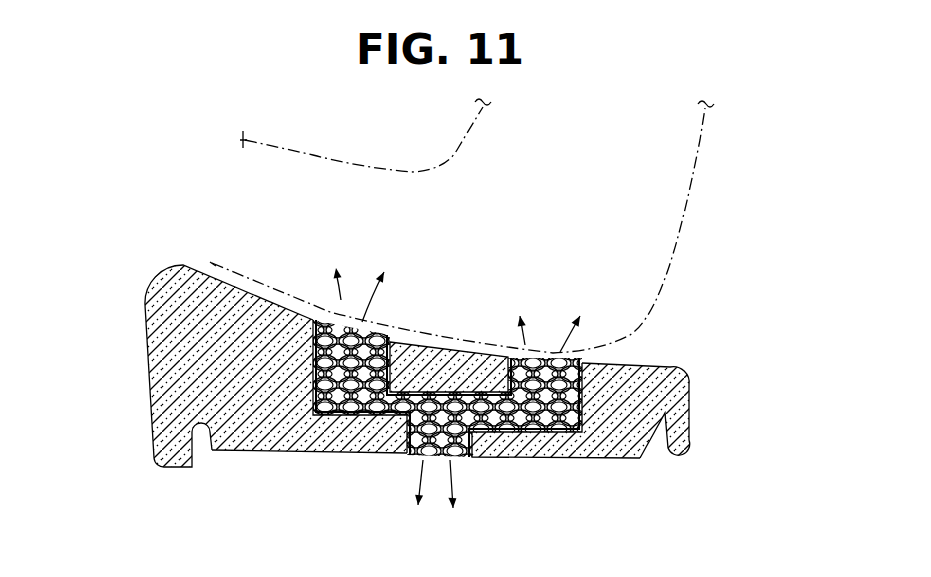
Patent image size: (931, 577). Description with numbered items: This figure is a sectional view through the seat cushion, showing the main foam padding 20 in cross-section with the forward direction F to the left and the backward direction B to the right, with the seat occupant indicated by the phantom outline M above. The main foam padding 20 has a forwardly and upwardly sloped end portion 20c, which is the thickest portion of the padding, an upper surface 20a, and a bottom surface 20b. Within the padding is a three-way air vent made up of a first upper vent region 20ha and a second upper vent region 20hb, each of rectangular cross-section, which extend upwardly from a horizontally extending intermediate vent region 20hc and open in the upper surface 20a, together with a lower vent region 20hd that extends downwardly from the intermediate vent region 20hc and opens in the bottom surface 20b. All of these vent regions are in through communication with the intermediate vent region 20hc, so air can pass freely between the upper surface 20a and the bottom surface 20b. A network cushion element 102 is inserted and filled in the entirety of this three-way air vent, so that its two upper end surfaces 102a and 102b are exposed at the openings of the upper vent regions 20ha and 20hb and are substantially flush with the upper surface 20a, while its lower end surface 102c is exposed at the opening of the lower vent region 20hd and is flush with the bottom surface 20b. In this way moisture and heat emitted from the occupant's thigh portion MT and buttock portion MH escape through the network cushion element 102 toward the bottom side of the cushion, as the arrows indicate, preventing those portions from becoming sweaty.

The main foam padding 20 is at (687, 372).
The upper surface 20a is at (244, 303).
The bottom surface 20b is at (245, 453).
The sloped end portion 20c is at (213, 268).
The first upper vent region 20ha is at (221, 450).
The second upper vent region 20hb is at (612, 459).
The intermediate vent region 20hc is at (390, 442).
The lower vent region 20hd is at (478, 457).
The network cushion element 102 is at (331, 424).
The upper end surface 102a is at (361, 330).
The upper end surface 102b is at (588, 358).
The lower end surface 102c is at (459, 457).
The mold M is at (698, 178).
The thigh portion MT is at (348, 312).
The buttock portion MH is at (500, 350).
The front direction F is at (55, 279).
The back direction B is at (810, 351).